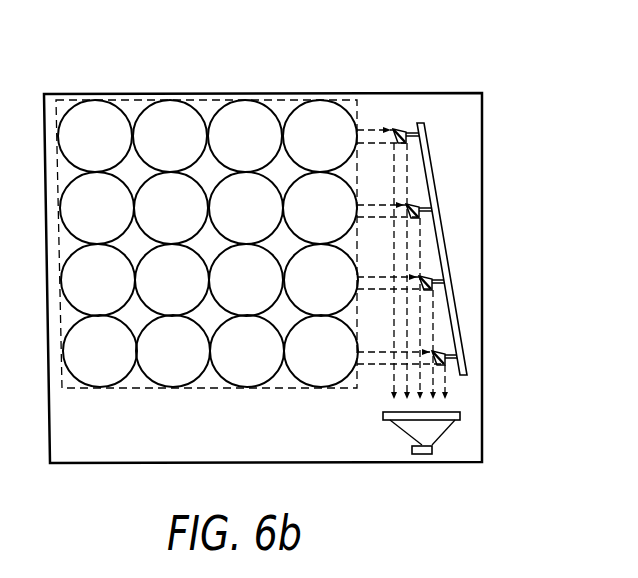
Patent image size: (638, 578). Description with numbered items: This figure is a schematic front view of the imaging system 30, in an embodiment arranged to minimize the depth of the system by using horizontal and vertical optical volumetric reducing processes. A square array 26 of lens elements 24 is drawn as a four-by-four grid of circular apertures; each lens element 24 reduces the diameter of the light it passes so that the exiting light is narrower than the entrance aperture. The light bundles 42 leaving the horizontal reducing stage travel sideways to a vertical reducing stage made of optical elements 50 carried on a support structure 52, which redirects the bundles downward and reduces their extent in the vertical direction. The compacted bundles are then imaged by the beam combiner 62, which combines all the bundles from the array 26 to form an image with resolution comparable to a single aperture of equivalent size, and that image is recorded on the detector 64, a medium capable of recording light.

The lens element 24 is at (77, 107).
The array 26 is at (135, 100).
The imaging system 30 is at (245, 93).
The light bundles 42 is at (366, 128).
The optical elements 50 is at (397, 130).
The support structure 52 is at (436, 228).
The beam combiner 62 is at (460, 414).
The detector 64 is at (415, 450).